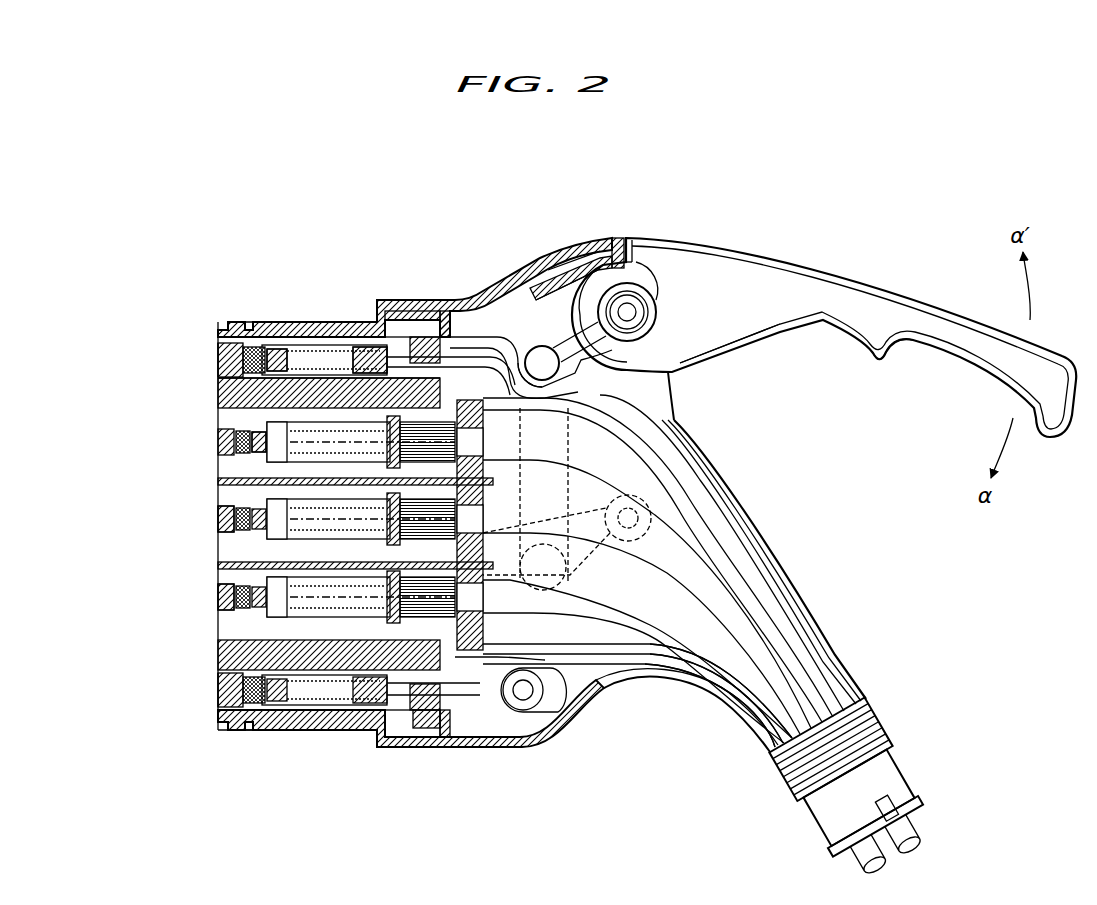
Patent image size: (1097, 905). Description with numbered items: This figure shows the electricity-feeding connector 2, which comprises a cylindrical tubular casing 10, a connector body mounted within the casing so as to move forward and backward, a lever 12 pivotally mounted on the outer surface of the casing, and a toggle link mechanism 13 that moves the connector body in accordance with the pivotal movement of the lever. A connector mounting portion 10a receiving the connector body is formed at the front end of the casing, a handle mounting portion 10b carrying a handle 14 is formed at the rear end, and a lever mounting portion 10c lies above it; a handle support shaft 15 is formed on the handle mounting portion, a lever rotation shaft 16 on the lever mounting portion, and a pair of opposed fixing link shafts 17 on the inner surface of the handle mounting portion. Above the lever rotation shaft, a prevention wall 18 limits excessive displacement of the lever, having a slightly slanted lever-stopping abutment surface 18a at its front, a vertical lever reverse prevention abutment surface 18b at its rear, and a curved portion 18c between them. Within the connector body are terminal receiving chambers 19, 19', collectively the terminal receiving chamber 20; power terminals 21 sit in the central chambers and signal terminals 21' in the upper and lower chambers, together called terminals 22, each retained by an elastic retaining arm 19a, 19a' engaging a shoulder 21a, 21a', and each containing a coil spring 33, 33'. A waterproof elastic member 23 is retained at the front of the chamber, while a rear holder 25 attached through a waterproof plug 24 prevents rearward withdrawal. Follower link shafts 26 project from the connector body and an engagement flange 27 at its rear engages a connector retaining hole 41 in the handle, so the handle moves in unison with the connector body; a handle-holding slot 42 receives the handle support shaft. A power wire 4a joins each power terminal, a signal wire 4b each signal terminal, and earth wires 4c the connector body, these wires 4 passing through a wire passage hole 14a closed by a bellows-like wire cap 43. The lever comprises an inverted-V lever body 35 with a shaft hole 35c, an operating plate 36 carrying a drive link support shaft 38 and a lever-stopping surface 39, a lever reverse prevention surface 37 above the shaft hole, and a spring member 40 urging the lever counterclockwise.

The electricity-feeding connector 2 is at (192, 295).
The wires 4 is at (740, 782).
The power wire 4a is at (627, 645).
The signal wire 4b is at (660, 655).
The earth wires 4c is at (708, 665).
The cylindrical tubular casing 10 is at (309, 318).
The connector mounting portion 10a is at (392, 311).
The handle mounting portion 10b is at (522, 722).
The lever mounting portion 10c is at (668, 388).
The lever 12 is at (847, 263).
The toggle link mechanism 13 is at (557, 600).
The handle 14 is at (774, 545).
The wire passage hole 14a is at (784, 595).
The handle support shaft 15 is at (516, 706).
The lever rotation shaft 16 is at (722, 348).
The fixing link shaft 17 is at (652, 520).
The prevention wall 18 is at (592, 268).
The lever-stopping abutment surface 18a is at (558, 275).
The lever reverse prevention abutment surface 18b is at (636, 255).
The curved portion 18c is at (648, 268).
The terminal receiving chamber 19 is at (311, 555).
The terminal receiving chamber 19' is at (250, 520).
The elastic retaining arm 19a is at (181, 536).
The elastic retaining arm 19a' is at (326, 284).
The terminal receiving chamber 20 is at (318, 790).
The power terminal 21 is at (297, 562).
The signal terminal 21' is at (250, 360).
The shoulder 21a is at (181, 602).
The shoulder 21a' is at (348, 311).
The terminals 22 is at (110, 348).
The waterproof elastic member 23 is at (220, 499).
The waterproof plug 24 is at (398, 740).
The rear holder 25 is at (682, 425).
The follower link shaft 26 is at (483, 508).
The engagement flange 27 is at (453, 335).
The coil spring 33 is at (287, 525).
The coil spring 33' is at (297, 789).
The lever body 35 is at (918, 316).
The shaft hole 35c is at (667, 310).
The operating plate 36 is at (530, 330).
The lever reverse prevention surface 37 is at (617, 262).
The drive link support shaft 38 is at (530, 352).
The lever-stopping surface 39 is at (580, 262).
The spring member 40 is at (690, 313).
The connector retaining hole 41 is at (423, 337).
The handle-holding slot 42 is at (548, 702).
The bellows-like wire cap 43 is at (872, 740).